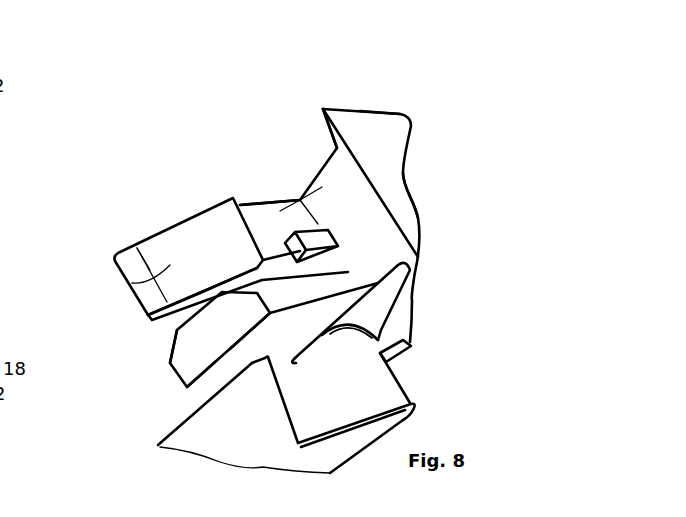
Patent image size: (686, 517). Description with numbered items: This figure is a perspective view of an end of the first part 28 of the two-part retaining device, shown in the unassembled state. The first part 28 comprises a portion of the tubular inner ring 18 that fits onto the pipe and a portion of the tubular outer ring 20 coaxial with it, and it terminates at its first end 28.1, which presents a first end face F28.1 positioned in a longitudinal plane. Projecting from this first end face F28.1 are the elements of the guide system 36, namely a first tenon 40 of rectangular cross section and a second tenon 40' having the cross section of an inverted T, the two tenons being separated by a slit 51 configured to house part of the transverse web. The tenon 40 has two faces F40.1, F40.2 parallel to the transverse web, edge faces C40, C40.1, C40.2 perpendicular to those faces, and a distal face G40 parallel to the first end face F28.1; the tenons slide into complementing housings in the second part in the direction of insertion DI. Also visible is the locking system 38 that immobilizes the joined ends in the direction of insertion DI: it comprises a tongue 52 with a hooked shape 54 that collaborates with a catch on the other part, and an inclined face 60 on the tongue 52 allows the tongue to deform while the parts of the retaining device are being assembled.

The first part 28 is at (424, 157).
The first end 28.1 is at (416, 202).
The first end face F28.1 is at (338, 200).
The outer ring 20 is at (378, 113).
The hooked shape 54 is at (250, 226).
The tongue 52 is at (256, 215).
The locking system 38 is at (203, 203).
The inclined face 60 is at (160, 249).
The direction of insertion DI is at (172, 200).
The tenon 40 is at (245, 313).
The second tenon 40' is at (125, 307).
The face F40.2 is at (188, 309).
The edge face C40 is at (176, 372).
The guide system 36 is at (172, 366).
The distal face G40 is at (190, 384).
The slit 51 is at (334, 265).
The edge face C40.1 is at (335, 284).
The inner ring 18 is at (297, 445).
The edge face C40.2 is at (200, 362).
The face F40.1 is at (250, 350).